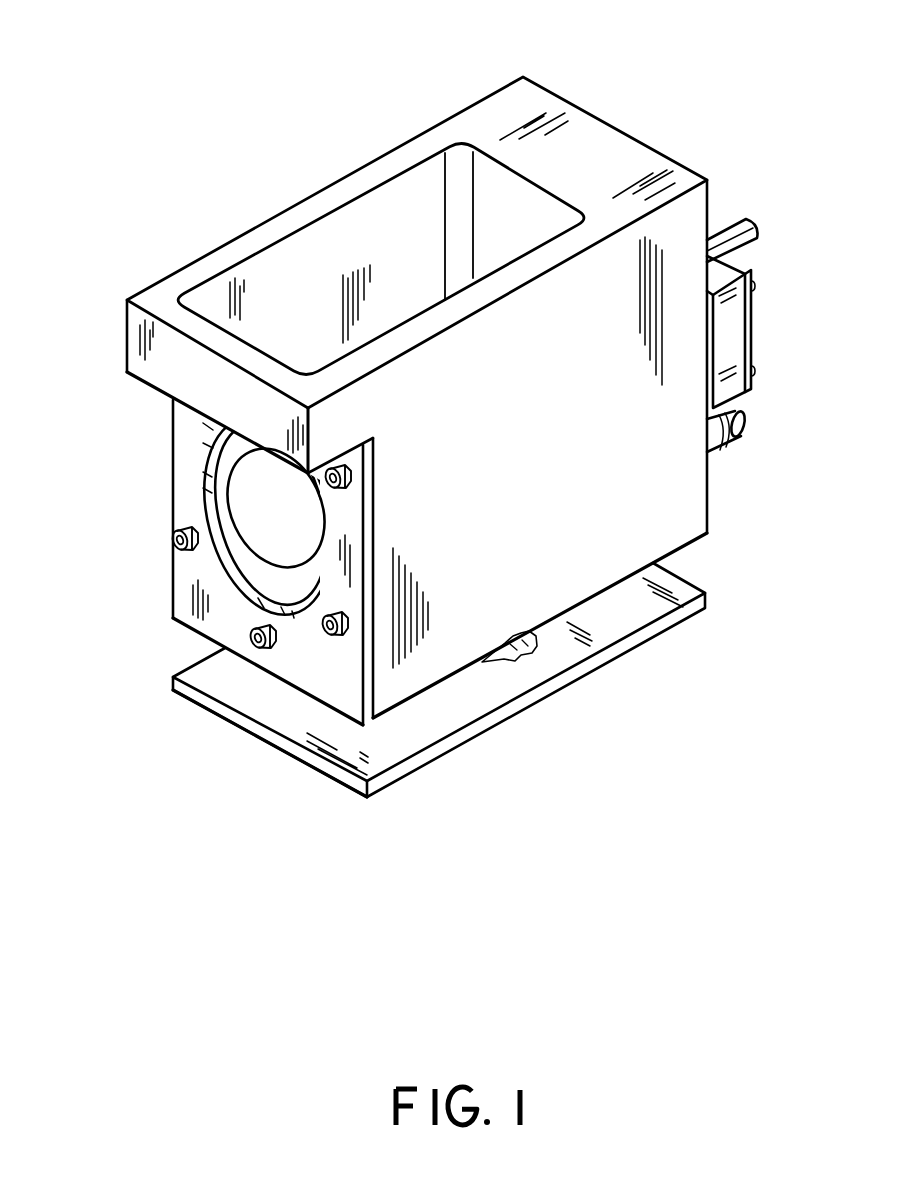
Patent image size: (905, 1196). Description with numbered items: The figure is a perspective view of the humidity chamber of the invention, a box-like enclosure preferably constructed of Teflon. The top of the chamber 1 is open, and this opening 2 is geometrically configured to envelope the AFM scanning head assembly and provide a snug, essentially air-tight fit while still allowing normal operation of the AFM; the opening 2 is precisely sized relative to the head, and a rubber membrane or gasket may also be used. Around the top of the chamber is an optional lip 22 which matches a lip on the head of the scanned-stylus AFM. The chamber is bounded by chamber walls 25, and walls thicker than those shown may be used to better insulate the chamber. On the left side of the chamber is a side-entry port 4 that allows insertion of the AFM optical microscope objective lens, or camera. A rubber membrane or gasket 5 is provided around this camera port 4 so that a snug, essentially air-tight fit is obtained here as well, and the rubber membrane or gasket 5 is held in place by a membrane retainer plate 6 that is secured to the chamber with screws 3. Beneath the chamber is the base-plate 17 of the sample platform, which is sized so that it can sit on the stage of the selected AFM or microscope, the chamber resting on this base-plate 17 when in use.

The chamber 1 is at (498, 118).
The opening 2 is at (342, 228).
The lip 22 is at (170, 350).
The chamber walls 25 is at (450, 313).
The side-entry port 4 is at (283, 500).
The screws 3 is at (325, 634).
The rubber membrane or gasket 5 is at (317, 587).
The membrane retainer plate 6 is at (323, 687).
The base-plate 17 is at (272, 707).